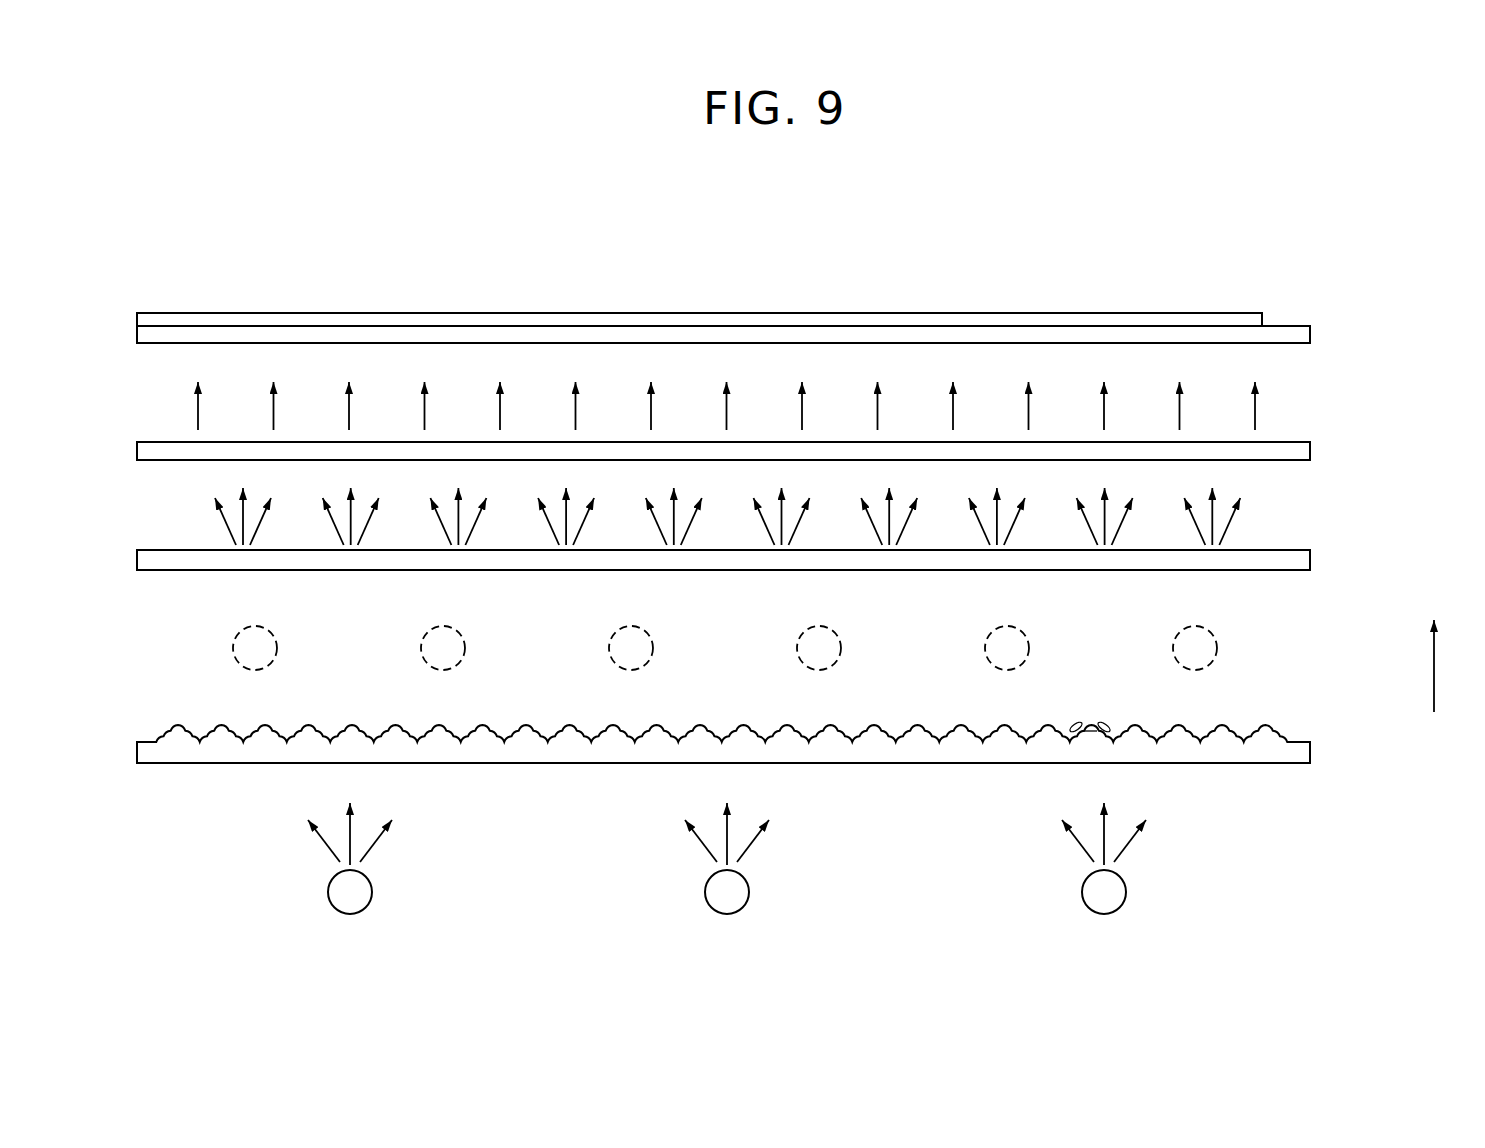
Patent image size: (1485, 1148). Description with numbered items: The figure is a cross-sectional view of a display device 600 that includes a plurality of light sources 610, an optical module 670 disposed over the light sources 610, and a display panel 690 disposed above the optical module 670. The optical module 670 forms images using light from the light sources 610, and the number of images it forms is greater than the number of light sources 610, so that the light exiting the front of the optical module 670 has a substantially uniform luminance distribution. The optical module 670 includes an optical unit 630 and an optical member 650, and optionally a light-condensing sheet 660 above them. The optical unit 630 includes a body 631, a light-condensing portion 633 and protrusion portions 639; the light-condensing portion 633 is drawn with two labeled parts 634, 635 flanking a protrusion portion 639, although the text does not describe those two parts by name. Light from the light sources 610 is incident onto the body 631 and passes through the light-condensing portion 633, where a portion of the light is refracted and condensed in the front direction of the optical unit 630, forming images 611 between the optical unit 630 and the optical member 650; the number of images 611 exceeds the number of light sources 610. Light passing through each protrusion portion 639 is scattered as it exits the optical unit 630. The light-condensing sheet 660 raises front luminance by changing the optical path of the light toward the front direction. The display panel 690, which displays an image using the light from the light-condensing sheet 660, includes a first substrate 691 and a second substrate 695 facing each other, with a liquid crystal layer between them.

The display device 600 is at (748, 218).
The display panel 690 is at (1383, 278).
The second substrate 695 is at (1258, 313).
The first substrate 691 is at (1312, 333).
The optical module 670 is at (1383, 437).
The light-condensing sheet 660 is at (1312, 452).
The optical member 650 is at (1312, 562).
The optical unit 630 is at (1293, 694).
The images 611 is at (1217, 648).
The body 631 is at (1312, 752).
The light-condensing portion 633 is at (1103, 679).
The first scattering portion 634 is at (1075, 728).
The protrusion portions 639 is at (1095, 729).
The second scattering portion 635 is at (1110, 728).
The light sources 610 is at (1128, 892).